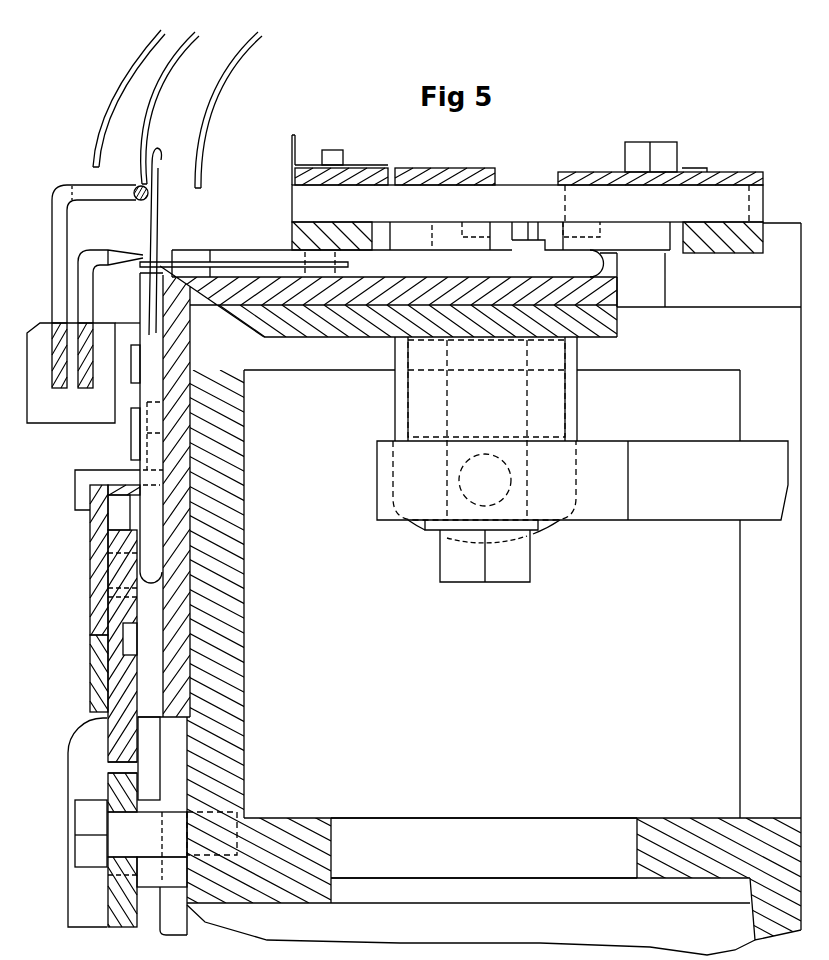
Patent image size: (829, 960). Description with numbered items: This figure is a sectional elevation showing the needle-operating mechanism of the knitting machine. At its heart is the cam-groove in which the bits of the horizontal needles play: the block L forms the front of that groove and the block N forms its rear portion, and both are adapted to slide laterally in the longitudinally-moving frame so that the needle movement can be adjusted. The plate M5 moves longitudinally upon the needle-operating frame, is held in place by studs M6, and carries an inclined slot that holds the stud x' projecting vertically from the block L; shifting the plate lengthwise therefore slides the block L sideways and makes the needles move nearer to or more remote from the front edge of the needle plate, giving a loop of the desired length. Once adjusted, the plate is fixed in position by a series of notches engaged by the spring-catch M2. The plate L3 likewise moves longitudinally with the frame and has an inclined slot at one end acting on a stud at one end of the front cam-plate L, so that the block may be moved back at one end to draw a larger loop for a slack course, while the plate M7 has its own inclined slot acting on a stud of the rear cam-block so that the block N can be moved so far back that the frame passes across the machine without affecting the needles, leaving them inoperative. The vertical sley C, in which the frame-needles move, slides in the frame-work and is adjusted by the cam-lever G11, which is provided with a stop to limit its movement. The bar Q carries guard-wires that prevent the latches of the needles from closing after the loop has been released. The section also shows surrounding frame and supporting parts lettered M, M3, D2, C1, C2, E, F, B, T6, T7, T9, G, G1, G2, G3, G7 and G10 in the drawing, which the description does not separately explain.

The supply pipe G10 is at (100, 254).
The bar carrying guard-wires Q is at (85, 336).
The slide guide top C2 is at (140, 309).
The stop member E is at (147, 415).
The vertical sley C is at (150, 572).
The bracket F is at (107, 490).
The guide bar G is at (91, 560).
The guide bar lower portion G3 is at (92, 673).
The guide bar head G1 is at (124, 507).
The guide bar strip G2 is at (122, 646).
The clamp bracket G7 is at (127, 835).
The cam-lever G11 is at (173, 914).
The mold body M is at (527, 203).
The studs M6 is at (331, 160).
The plate M5 is at (331, 176).
The stud x' is at (332, 145).
The plate L3 is at (445, 166).
The plate M7 is at (660, 163).
The spring-catch M2 is at (393, 236).
The block L is at (451, 236).
The block N is at (591, 236).
The mold end block M3 is at (723, 237).
The frame upright D2 is at (695, 265).
The slide plate C1 is at (396, 291).
The table plate T6 is at (417, 321).
The table bracket T7 is at (486, 428).
The table arm T9 is at (582, 511).
The base B is at (484, 848).